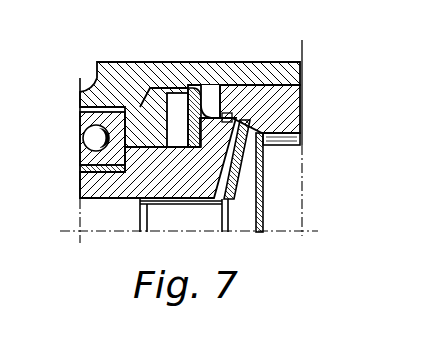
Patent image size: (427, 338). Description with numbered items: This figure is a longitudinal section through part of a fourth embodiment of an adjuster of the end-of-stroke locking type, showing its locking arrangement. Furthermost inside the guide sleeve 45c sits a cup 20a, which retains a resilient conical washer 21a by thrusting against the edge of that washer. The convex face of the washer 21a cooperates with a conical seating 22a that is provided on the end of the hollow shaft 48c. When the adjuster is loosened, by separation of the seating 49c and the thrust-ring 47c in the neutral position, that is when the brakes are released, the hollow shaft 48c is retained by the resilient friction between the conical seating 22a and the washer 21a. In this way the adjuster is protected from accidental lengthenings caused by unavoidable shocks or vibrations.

The guide sleeve 45c is at (297, 62).
The thrust-ring 47c is at (196, 64).
The seating 49c is at (143, 86).
The hollow shaft 48c is at (98, 187).
The resilient conical washer 21a is at (294, 148).
The cup 20a is at (264, 192).
The conical seating 22a is at (211, 200).